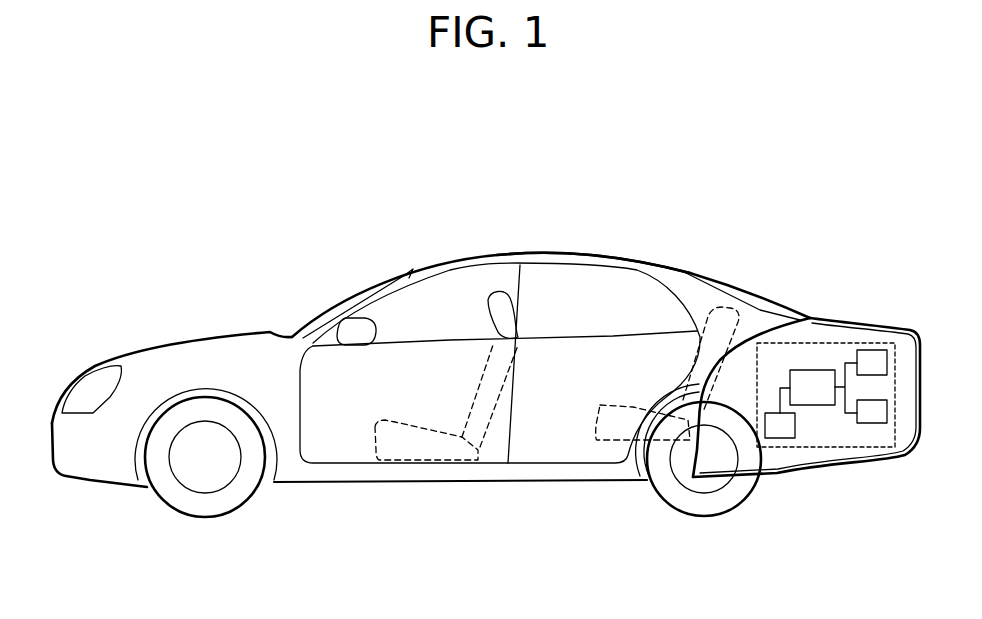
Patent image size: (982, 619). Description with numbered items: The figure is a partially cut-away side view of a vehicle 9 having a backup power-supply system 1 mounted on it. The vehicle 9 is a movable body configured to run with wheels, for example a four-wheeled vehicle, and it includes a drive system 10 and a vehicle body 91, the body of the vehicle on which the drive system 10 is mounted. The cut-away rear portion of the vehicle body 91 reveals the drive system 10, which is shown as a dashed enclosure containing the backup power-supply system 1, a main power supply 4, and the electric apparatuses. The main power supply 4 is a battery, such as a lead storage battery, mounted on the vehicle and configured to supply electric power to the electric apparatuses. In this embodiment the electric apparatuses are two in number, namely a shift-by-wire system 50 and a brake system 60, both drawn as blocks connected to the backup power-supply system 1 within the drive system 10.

The vehicle 9 is at (732, 280).
The vehicle body 91 is at (600, 258).
The drive system 10 is at (833, 343).
The backup power-supply system 1 is at (827, 397).
The main power supply 4 is at (787, 430).
The shift-by-wire system 50 is at (877, 358).
The brake system 60 is at (870, 417).